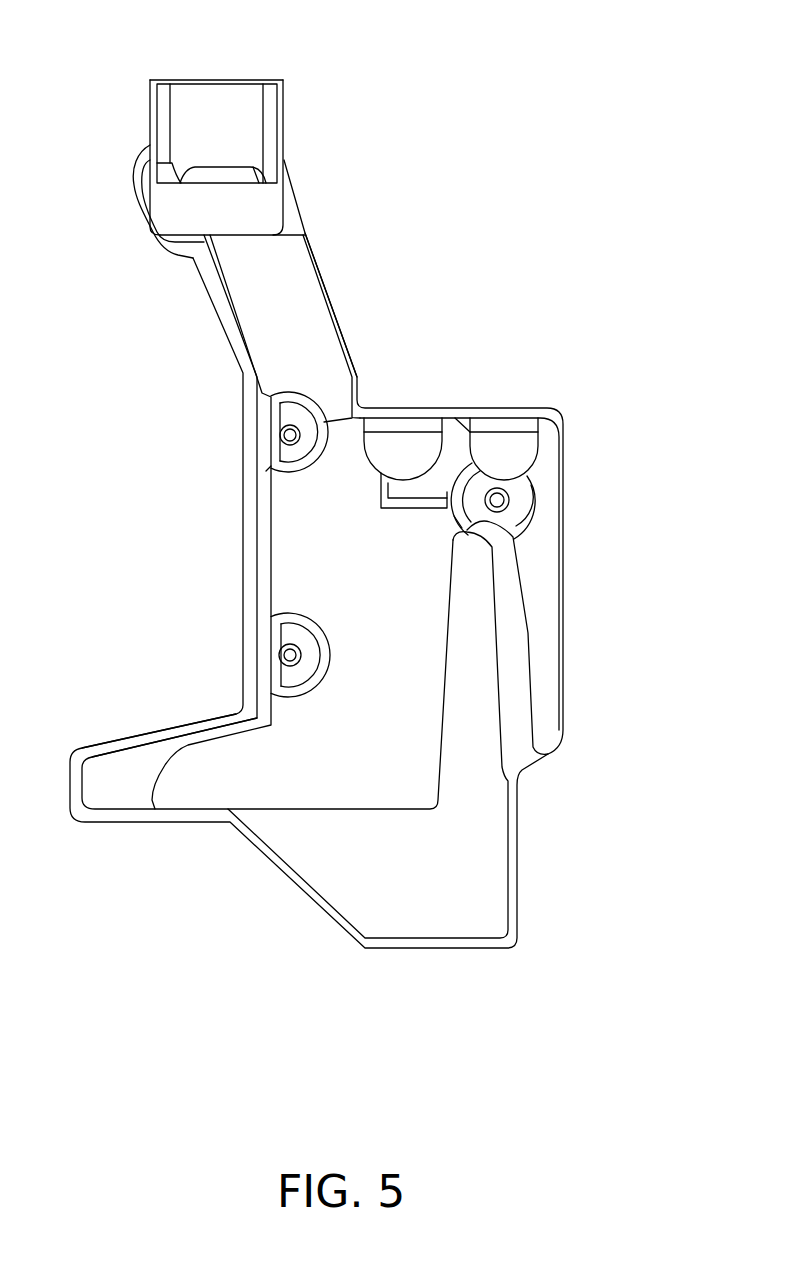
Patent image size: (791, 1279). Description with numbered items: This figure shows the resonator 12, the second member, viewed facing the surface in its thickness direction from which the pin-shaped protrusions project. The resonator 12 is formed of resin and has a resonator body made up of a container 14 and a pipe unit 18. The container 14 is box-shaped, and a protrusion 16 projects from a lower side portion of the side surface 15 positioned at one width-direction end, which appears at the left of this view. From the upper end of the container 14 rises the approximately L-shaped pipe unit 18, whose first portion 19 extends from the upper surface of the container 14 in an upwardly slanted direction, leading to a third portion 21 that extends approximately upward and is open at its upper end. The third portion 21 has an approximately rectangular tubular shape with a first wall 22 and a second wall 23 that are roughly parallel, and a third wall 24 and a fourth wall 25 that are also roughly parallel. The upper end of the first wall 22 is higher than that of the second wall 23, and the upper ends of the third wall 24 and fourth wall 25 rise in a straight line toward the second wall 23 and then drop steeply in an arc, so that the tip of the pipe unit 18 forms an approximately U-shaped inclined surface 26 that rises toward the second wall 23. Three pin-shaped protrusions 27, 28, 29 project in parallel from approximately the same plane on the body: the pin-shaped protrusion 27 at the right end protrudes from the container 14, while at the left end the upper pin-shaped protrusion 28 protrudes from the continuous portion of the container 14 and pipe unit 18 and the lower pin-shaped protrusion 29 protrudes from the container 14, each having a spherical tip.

The resonator 12 is at (418, 97).
The container 14 is at (243, 548).
The side surface 15 is at (565, 562).
The protrusion 16 is at (128, 738).
The pipe unit 18 is at (330, 290).
The first portion 19 is at (320, 265).
The third portion 21 is at (173, 208).
The first wall 22 is at (238, 122).
The second wall 23 is at (255, 207).
The third wall 24 is at (150, 120).
The fourth wall 25 is at (285, 93).
The inclined surface 26 is at (283, 80).
The pin-shaped protrusion 27 is at (500, 499).
The pin-shaped protrusion 28 is at (308, 398).
The pin-shaped protrusion 29 is at (292, 652).